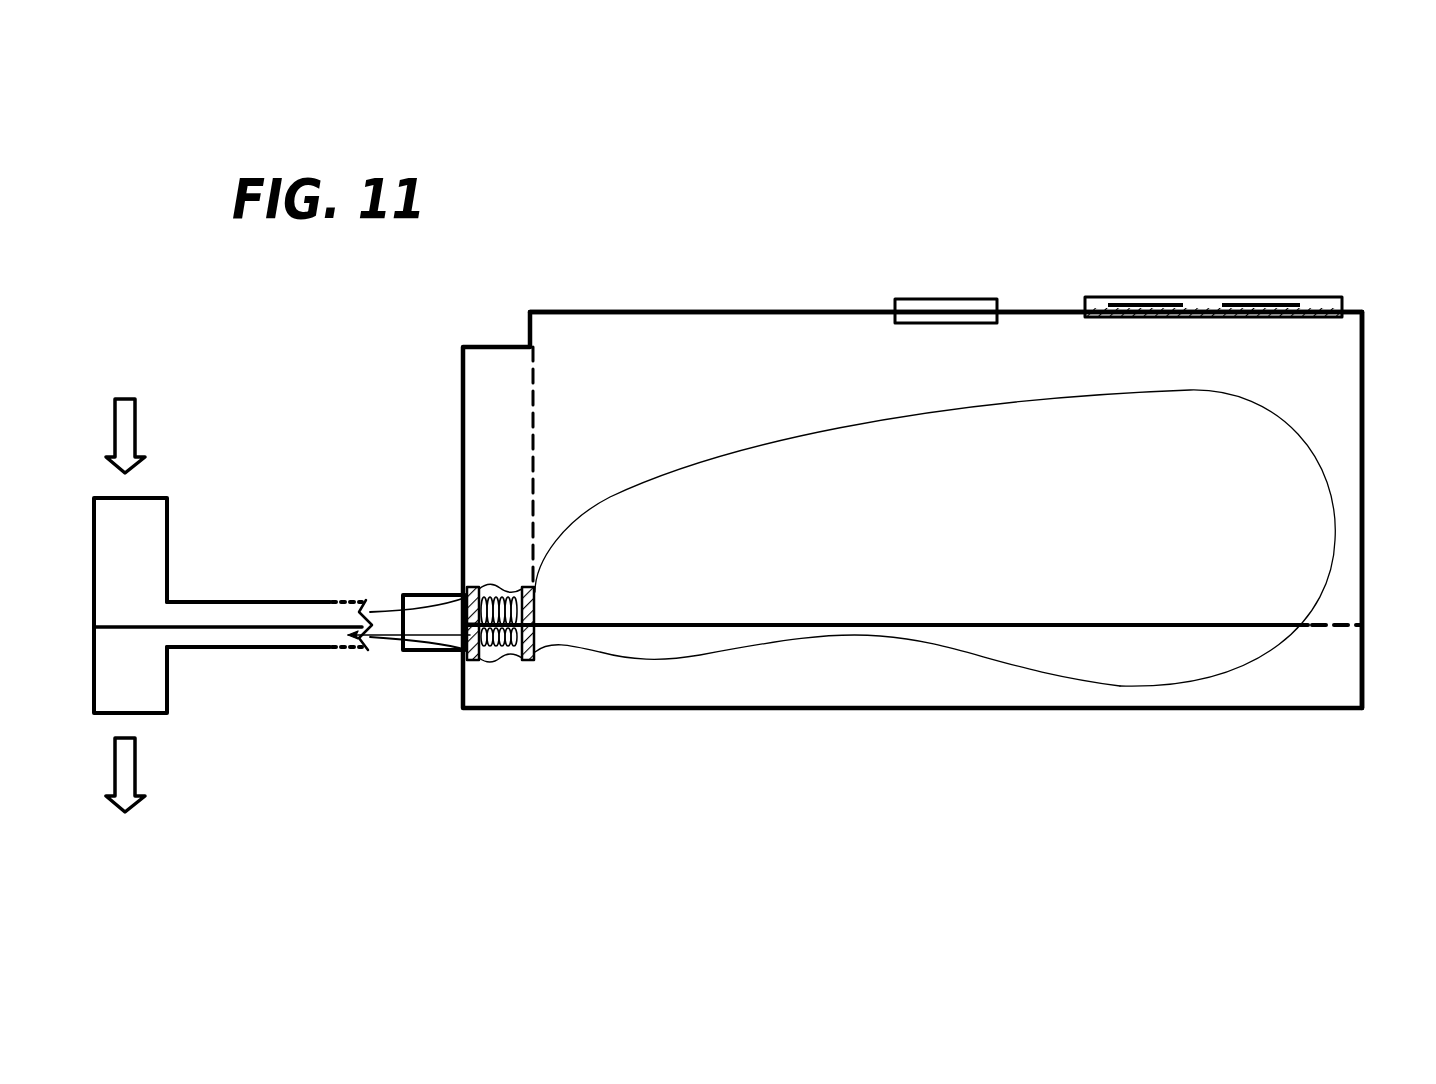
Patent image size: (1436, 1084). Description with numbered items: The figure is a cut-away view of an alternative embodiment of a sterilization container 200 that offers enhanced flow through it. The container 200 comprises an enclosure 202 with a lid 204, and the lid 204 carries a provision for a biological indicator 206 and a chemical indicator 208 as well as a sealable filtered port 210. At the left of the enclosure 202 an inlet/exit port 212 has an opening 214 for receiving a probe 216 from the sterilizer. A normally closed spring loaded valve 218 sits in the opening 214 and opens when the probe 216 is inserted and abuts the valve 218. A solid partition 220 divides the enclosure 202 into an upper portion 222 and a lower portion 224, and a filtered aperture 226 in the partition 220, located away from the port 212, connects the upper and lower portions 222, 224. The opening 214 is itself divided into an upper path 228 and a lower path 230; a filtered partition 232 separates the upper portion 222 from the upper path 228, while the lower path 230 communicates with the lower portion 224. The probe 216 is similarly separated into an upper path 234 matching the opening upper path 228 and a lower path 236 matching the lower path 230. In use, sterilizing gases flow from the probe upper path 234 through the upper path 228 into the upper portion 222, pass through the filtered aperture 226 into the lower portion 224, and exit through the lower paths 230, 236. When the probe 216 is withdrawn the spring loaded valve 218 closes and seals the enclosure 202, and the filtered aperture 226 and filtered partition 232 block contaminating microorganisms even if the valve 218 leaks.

The container 200 is at (1136, 745).
The enclosure 202 is at (1305, 710).
The lid 204 is at (565, 308).
The biological indicator 206 is at (1145, 298).
The chemical indicator 208 is at (1262, 298).
The sealable filtered port 210 is at (946, 298).
The inlet/exit port 212 is at (428, 676).
The opening 214 is at (403, 655).
The probe 216 is at (278, 652).
The spring loaded valve 218 is at (513, 688).
The solid partition 220 is at (759, 620).
The upper portion 222 is at (935, 538).
The lower portion 224 is at (827, 662).
The filtered aperture 226 is at (1333, 620).
The upper path 228 is at (470, 605).
The lower path 230 is at (458, 655).
The filtered partition 232 is at (534, 425).
The upper path 234 is at (252, 612).
The lower path 236 is at (213, 655).